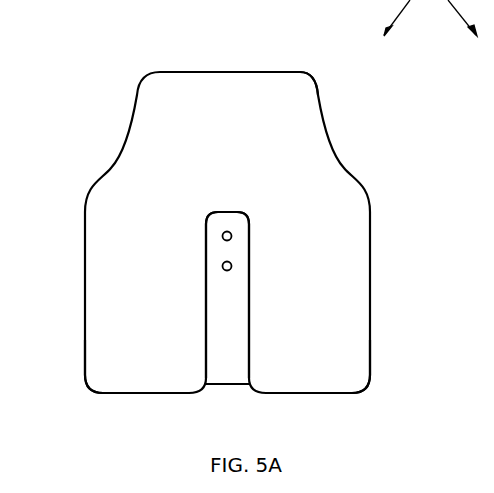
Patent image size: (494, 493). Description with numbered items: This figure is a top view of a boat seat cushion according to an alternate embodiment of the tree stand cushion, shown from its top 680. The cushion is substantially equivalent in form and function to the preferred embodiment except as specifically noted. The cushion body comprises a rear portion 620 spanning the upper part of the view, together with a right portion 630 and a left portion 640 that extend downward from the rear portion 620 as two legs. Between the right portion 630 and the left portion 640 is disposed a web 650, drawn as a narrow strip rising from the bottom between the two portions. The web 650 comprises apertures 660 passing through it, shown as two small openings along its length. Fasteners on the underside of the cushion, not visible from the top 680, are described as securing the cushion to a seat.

The rear portion 620 is at (257, 105).
The top 680 is at (275, 113).
The apertures 660 is at (232, 266).
The right portion 630 is at (115, 372).
The left portion 640 is at (310, 370).
The web 650 is at (230, 369).